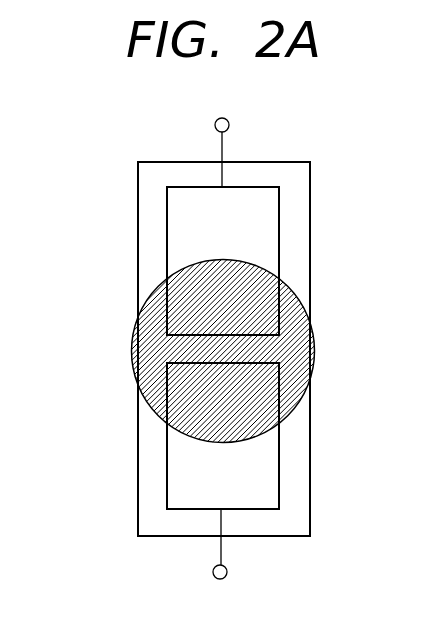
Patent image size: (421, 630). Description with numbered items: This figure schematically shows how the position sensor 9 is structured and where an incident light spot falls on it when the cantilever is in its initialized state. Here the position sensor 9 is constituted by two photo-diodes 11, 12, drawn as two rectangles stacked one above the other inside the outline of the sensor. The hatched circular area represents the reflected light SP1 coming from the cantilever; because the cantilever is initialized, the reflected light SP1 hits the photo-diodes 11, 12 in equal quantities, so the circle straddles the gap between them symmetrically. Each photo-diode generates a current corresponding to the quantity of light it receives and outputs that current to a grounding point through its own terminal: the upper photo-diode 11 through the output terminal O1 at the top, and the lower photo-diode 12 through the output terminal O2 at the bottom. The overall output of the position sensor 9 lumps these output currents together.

The position sensor 9 is at (173, 170).
The photo-diode 11 is at (272, 205).
The photo-diode 12 is at (271, 478).
The reflected light SP1 is at (142, 374).
The output terminal O1 is at (229, 126).
The output terminal O2 is at (227, 572).